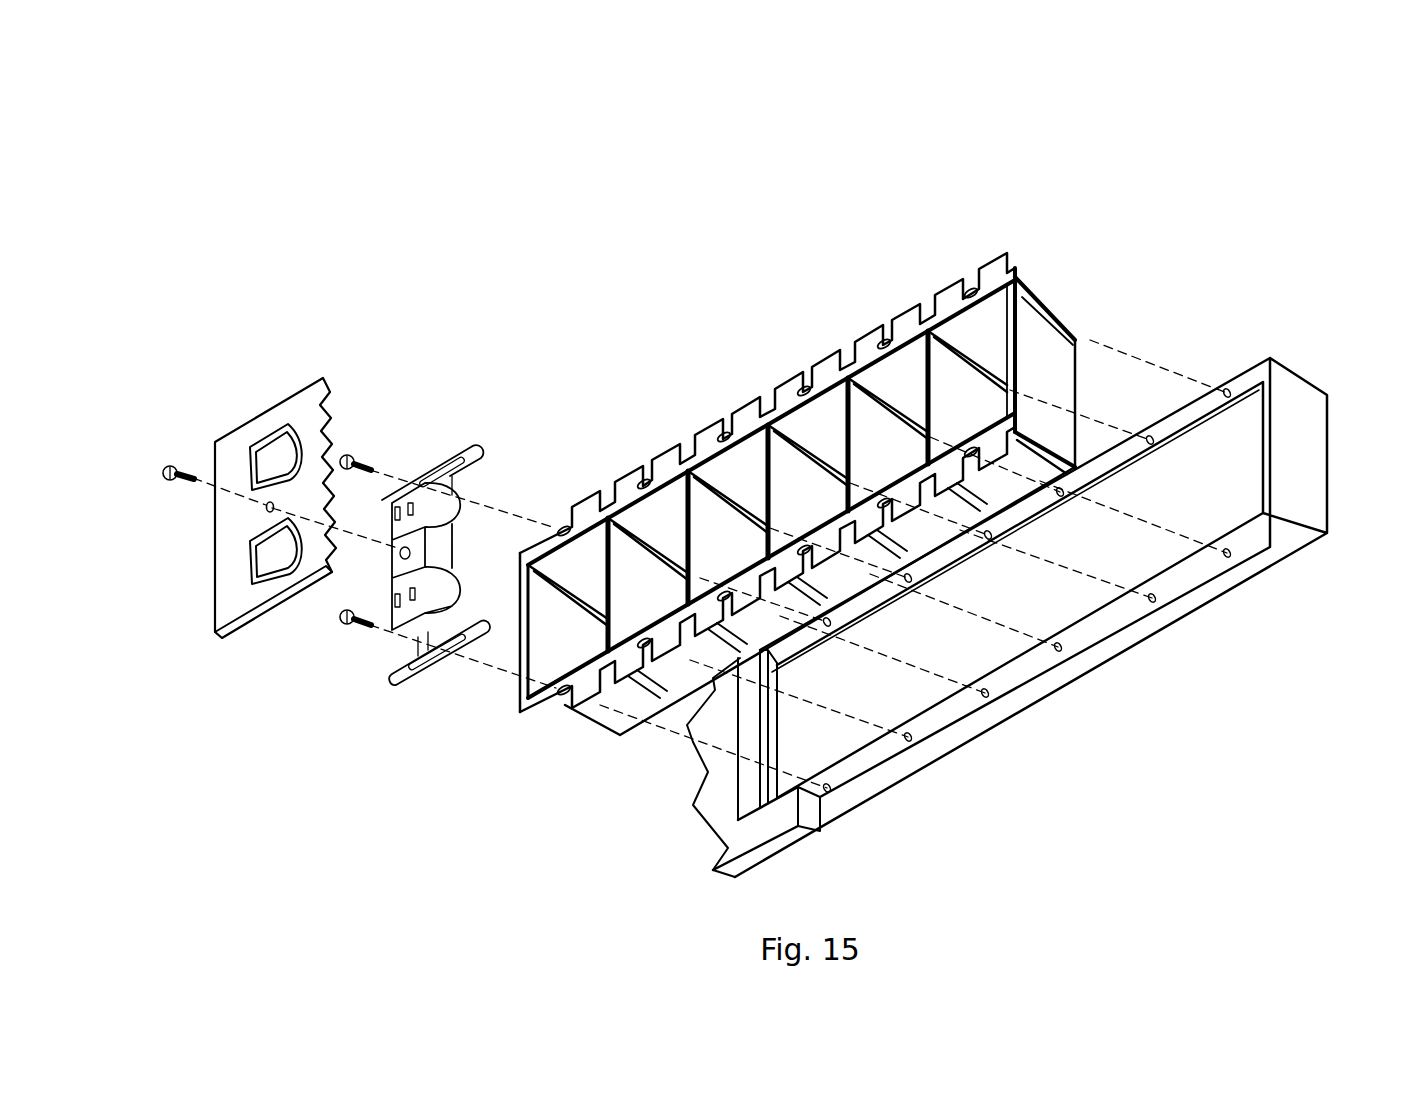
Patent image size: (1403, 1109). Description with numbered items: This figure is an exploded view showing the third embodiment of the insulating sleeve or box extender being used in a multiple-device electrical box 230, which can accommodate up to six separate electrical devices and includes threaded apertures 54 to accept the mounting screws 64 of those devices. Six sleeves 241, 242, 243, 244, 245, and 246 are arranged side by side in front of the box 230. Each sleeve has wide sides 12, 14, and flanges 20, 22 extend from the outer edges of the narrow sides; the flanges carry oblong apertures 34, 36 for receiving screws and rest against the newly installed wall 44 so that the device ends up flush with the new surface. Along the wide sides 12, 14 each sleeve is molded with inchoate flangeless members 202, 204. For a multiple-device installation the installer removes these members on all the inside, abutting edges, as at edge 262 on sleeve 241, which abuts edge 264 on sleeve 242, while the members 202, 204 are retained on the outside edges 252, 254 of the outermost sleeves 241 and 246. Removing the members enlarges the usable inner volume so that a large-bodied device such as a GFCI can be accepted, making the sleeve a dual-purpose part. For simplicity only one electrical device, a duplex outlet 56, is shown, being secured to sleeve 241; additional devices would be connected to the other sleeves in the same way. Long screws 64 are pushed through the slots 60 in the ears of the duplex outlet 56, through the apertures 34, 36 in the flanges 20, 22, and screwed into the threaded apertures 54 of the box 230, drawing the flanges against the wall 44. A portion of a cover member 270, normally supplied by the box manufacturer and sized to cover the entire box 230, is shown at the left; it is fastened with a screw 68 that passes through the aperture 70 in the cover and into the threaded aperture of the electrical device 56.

The wide side 12 is at (1033, 400).
The wide side 14 is at (553, 664).
The flange 20 is at (583, 690).
The flange 22 is at (588, 516).
The aperture 34 is at (566, 708).
The aperture 36 is at (563, 526).
The newly installed wall 44 is at (745, 844).
The threaded aperture 54 is at (829, 793).
The duplex outlet 56 is at (460, 523).
The slot 60 is at (447, 432).
The long screw 64 is at (353, 457).
The screw 68 is at (165, 481).
The aperture 70 is at (266, 509).
The inchoate flangeless member 202 is at (818, 455).
The inchoate flangeless member 204 is at (521, 645).
The multiple-device electrical box 230 is at (1022, 572).
The sleeve 241 is at (587, 505).
The sleeve 242 is at (666, 458).
The sleeve 243 is at (746, 412).
The sleeve 244 is at (826, 365).
The sleeve 245 is at (906, 318).
The sleeve 246 is at (991, 266).
The outside edge 252 is at (1014, 357).
The outside edge 254 is at (521, 636).
The edge 262 is at (609, 576).
The edge 264 is at (606, 628).
The cover member 270 is at (253, 430).